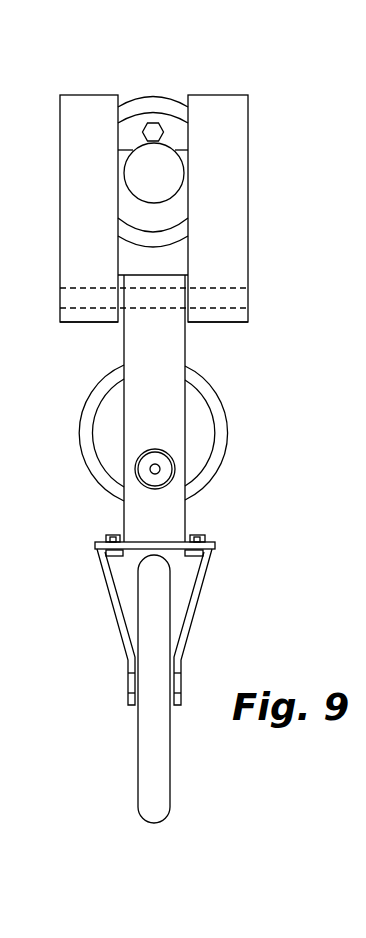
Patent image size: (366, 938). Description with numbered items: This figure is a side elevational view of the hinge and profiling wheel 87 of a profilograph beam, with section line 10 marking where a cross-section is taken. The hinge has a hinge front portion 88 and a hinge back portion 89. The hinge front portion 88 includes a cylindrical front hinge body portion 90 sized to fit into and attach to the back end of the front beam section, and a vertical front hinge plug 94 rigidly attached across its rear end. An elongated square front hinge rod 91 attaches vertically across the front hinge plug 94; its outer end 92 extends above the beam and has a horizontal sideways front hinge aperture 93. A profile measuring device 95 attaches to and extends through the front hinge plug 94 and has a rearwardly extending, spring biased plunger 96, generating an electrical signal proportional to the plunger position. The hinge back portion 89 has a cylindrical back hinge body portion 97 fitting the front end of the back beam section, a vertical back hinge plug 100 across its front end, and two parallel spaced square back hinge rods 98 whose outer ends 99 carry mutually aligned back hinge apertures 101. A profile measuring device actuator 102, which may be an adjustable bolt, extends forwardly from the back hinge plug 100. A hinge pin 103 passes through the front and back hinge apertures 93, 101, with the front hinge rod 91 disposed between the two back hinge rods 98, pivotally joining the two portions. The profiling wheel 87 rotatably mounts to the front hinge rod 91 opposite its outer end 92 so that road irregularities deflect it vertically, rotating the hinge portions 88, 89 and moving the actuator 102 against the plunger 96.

The section line 10- 10 is at (154, 81).
The profiling wheel 87 is at (160, 625).
The hinge front portion 88 is at (88, 413).
The hinge back portion 89 is at (60, 158).
The front hinge body portion 90 is at (213, 392).
The front hinge rod 91 is at (170, 510).
The outer end 92 is at (143, 278).
The front hinge aperture 93 is at (160, 308).
The front hinge plug 94 is at (200, 425).
The profile measuring device 95 is at (172, 478).
The plunger 96 is at (160, 463).
The back hinge body portion 97 is at (168, 107).
The back hinge rods 98 is at (235, 218).
The outer end 99 is at (77, 323).
The back hinge plug 100 is at (178, 130).
The back hinge apertures 101 is at (230, 308).
The profile measuring device actuator 102 is at (152, 126).
The hinge pin 103 is at (240, 297).